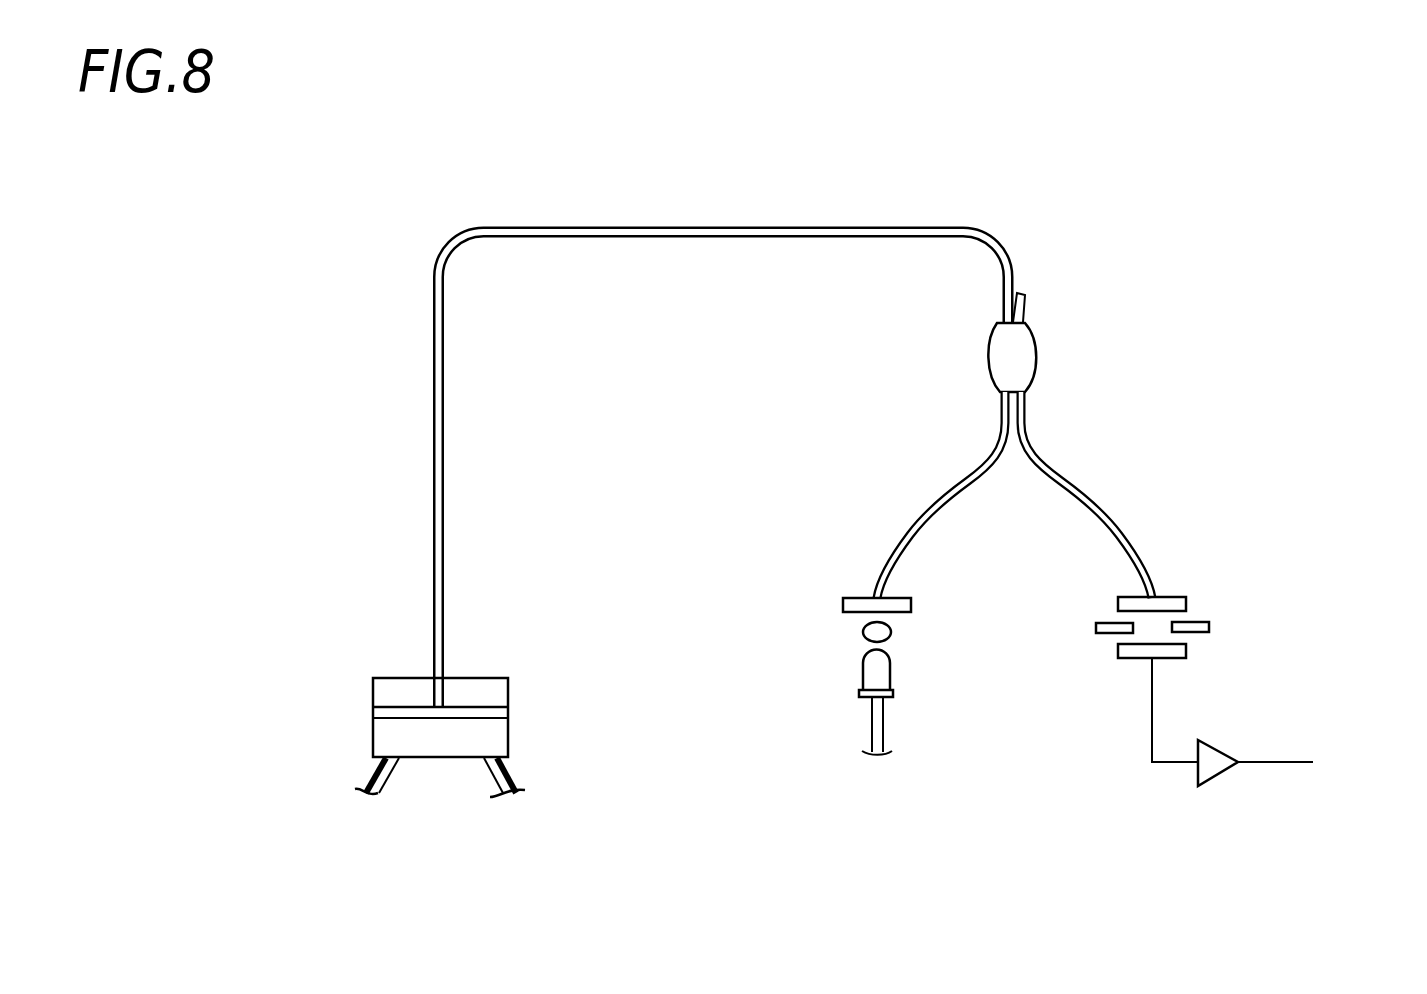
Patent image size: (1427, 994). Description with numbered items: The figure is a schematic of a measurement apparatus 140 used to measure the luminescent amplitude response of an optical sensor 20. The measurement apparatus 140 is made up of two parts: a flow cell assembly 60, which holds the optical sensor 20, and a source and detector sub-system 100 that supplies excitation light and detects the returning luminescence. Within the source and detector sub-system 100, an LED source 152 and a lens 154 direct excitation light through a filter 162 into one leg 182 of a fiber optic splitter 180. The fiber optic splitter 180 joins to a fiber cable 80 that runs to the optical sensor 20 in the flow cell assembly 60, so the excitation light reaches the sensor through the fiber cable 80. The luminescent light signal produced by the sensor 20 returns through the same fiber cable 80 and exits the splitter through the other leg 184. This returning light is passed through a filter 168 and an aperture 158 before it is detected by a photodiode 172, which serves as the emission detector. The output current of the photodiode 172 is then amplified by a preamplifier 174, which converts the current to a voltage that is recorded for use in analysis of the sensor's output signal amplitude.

The optical sensor 20 is at (510, 692).
The flow cell assembly 60 is at (355, 682).
The fiber cable 80 is at (438, 693).
The source and detector sub-system 100 is at (1307, 230).
The measurement apparatus 140 is at (1016, 815).
The LED source 152 is at (862, 672).
The lens 154 is at (892, 630).
The aperture 158 is at (1105, 625).
The filter 162 is at (843, 603).
The filter 168 is at (1185, 604).
The photodiode 172 is at (1182, 651).
The preamplifier 174 is at (1212, 764).
The fiber optic splitter 180 is at (1024, 366).
The leg 182 is at (928, 505).
The leg 184 is at (1107, 516).